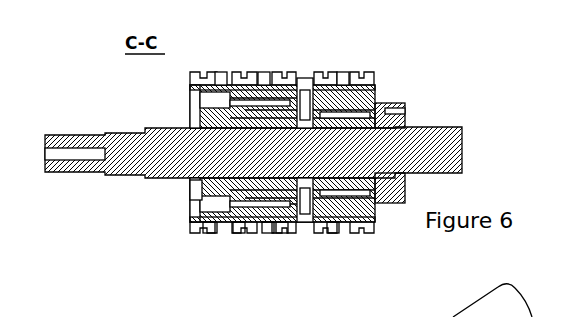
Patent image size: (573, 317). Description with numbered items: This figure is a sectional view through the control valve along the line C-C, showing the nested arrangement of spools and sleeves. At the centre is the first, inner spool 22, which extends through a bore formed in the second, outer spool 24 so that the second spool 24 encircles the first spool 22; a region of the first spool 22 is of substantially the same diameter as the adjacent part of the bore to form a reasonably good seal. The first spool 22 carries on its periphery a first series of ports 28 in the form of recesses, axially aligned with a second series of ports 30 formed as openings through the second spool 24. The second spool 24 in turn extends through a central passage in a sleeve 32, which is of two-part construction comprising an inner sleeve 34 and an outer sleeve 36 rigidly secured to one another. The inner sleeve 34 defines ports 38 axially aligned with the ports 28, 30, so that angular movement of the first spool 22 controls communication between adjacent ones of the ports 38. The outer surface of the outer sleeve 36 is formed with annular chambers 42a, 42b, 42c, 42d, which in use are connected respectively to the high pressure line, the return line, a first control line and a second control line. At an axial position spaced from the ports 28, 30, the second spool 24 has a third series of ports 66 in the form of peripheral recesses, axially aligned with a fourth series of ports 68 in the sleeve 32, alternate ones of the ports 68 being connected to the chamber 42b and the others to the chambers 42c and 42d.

The first, inner spool 22 is at (143, 130).
The second, outer spool 24 is at (267, 232).
The first series of ports 28 is at (390, 112).
The second series of ports 30 is at (368, 91).
The sleeve 32 is at (282, 244).
The inner sleeve 34 is at (238, 233).
The outer sleeve 36 is at (332, 232).
The ports 38 is at (358, 80).
The first chamber 42a is at (305, 70).
The second chamber 42b is at (221, 66).
The third chamber 42c is at (343, 66).
The fourth chamber 42d is at (264, 66).
The third series of ports 66 is at (192, 198).
The fourth series of ports 68 is at (208, 232).